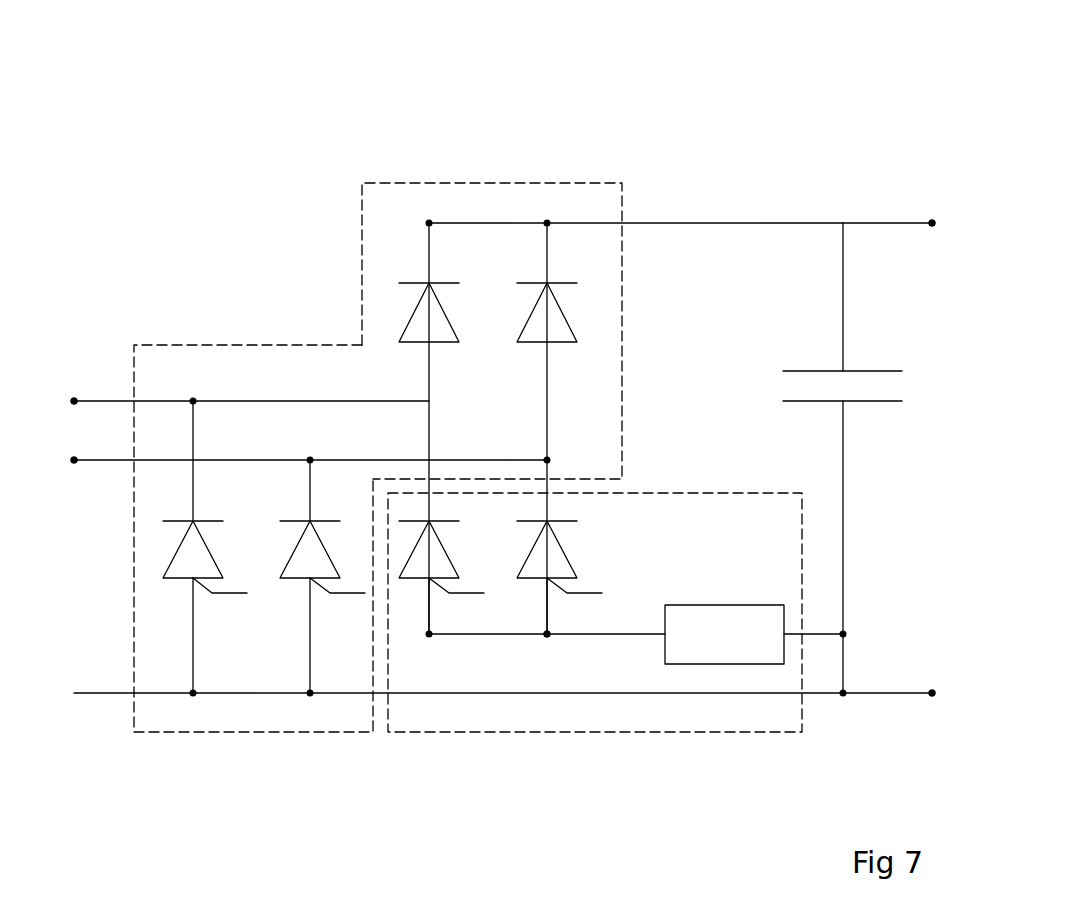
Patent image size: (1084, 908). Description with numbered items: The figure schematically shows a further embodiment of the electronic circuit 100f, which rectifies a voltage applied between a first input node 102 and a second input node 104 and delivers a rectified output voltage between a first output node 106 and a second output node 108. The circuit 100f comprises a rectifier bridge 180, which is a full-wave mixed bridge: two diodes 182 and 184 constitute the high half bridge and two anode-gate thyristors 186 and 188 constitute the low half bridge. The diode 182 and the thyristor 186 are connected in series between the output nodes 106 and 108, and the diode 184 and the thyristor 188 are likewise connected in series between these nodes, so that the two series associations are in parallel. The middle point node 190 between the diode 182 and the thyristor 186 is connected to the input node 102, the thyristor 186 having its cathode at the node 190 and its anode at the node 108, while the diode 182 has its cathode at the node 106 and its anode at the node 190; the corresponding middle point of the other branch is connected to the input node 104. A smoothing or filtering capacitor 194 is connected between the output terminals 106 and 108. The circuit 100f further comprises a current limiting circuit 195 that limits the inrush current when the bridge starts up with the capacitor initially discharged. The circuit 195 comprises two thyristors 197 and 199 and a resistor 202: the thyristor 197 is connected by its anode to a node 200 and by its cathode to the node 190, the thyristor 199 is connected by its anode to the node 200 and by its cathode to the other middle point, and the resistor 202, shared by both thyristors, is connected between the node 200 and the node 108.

The electronic circuit 100f is at (806, 85).
The first input node 102 is at (74, 401).
The second input node 104 is at (74, 464).
The first output node 106 is at (932, 223).
The second output node 108 is at (932, 693).
The rectifier bridge 180 is at (568, 183).
The diode 182 is at (413, 312).
The diode 184 is at (566, 319).
The thyristor 186 is at (205, 556).
The thyristor 188 is at (318, 556).
The middle point node 190 is at (193, 401).
The smoothing capacitor 194 is at (868, 371).
The current limiting circuit 195 is at (548, 732).
The thyristor 197 is at (435, 563).
The thyristor 199 is at (556, 563).
The node 200 is at (548, 638).
The resistor 202 is at (722, 664).